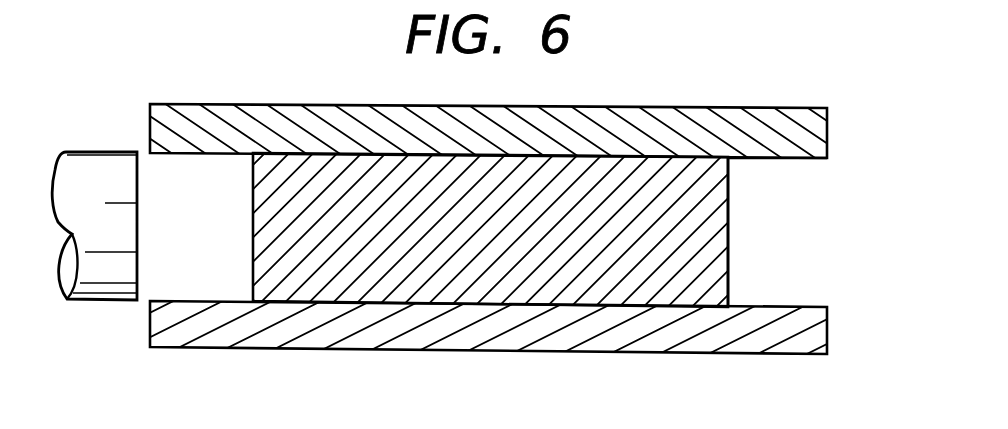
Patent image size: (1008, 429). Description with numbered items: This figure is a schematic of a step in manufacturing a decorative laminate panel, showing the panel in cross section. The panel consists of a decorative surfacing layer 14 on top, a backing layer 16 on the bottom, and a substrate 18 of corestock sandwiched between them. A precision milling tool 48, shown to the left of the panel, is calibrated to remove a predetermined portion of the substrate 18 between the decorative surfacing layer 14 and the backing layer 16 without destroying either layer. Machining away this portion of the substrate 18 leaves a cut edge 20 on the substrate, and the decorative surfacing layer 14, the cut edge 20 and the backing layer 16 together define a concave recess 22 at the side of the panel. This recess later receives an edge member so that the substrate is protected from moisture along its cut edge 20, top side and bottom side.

The decorative surfacing layer 14 is at (628, 135).
The backing layer 16 is at (275, 337).
The substrate 18 is at (487, 265).
The cut edge 20 is at (728, 239).
The concave recess 22 is at (813, 276).
The precision milling tool 48 is at (108, 162).